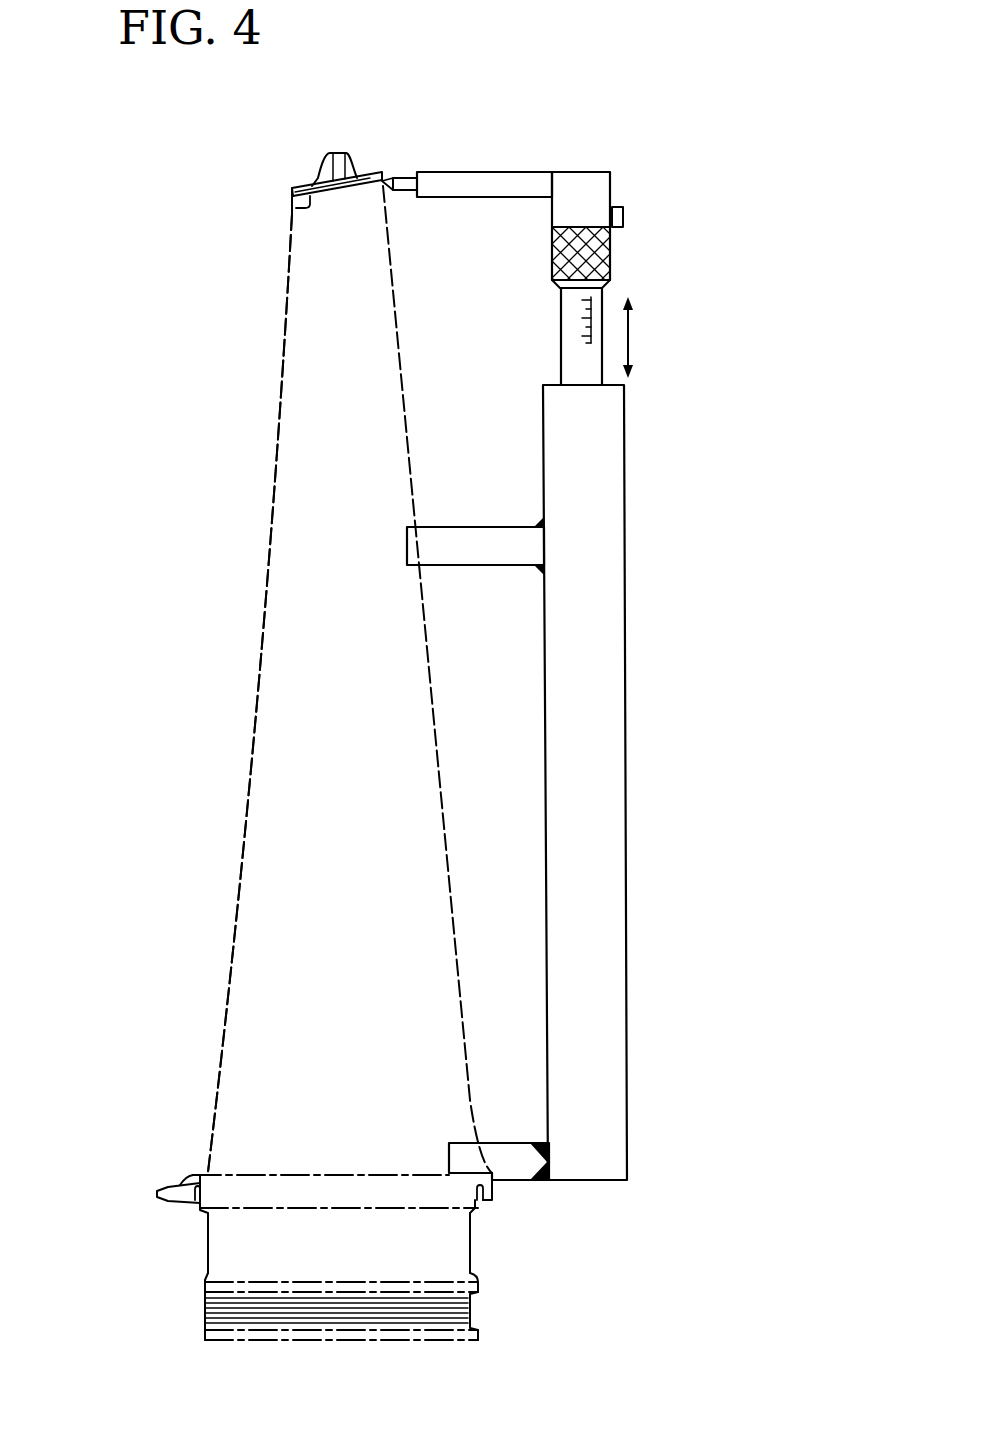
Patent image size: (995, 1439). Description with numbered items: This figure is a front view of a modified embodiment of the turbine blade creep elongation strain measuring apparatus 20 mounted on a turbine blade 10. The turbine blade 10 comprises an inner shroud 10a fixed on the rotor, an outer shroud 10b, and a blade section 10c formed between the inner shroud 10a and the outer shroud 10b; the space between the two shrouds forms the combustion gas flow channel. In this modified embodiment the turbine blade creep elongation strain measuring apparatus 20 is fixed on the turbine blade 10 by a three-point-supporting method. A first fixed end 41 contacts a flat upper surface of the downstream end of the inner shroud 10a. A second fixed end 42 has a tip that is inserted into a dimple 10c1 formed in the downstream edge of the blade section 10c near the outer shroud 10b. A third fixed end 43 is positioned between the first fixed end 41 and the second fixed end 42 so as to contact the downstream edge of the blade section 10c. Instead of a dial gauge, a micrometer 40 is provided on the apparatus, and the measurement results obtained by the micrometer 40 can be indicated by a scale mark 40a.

The turbine blade 10 is at (250, 652).
The inner shroud 10a is at (273, 1173).
The outer shroud 10b is at (300, 210).
The blade section 10c is at (244, 808).
The dimple 10c1 is at (361, 207).
The turbine blade creep elongation strain measuring apparatus 20 is at (680, 486).
The micrometer 40 is at (603, 250).
The scale mark 40a is at (565, 322).
The first fixed end 41 is at (513, 1173).
The second fixed end 42 is at (405, 178).
The third fixed end 43 is at (482, 538).